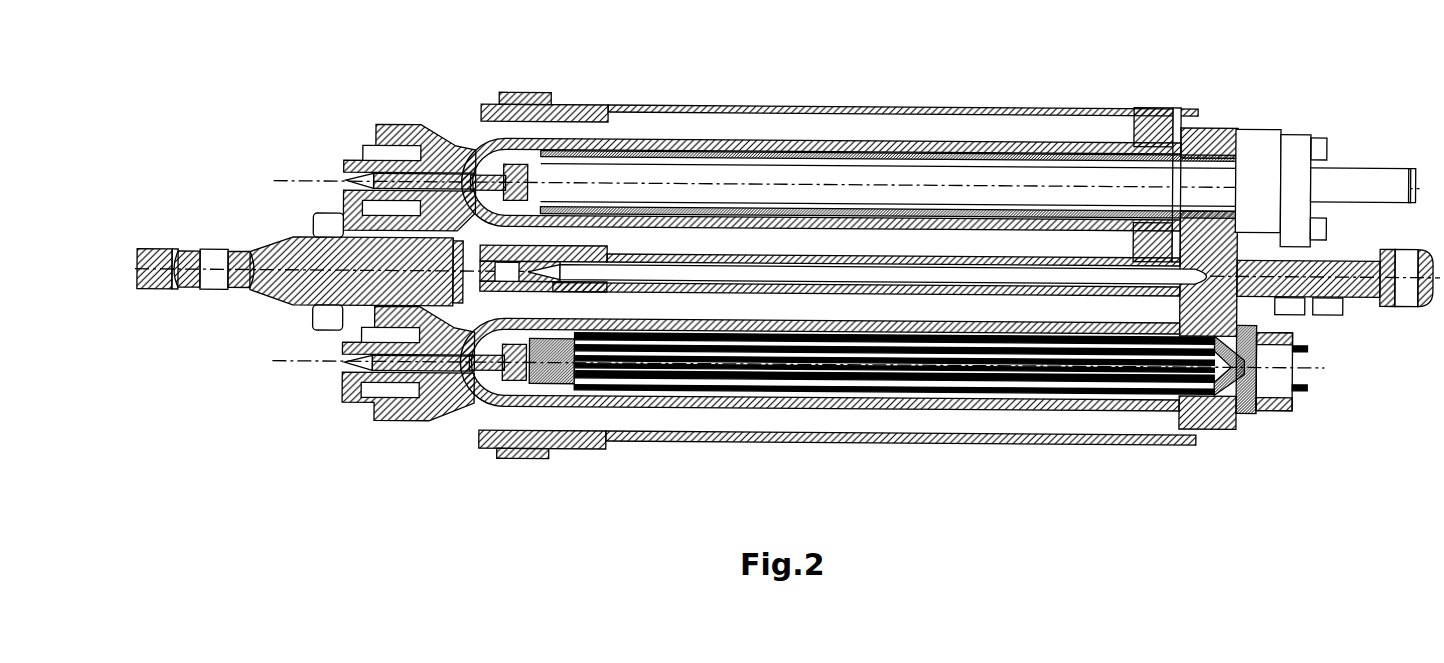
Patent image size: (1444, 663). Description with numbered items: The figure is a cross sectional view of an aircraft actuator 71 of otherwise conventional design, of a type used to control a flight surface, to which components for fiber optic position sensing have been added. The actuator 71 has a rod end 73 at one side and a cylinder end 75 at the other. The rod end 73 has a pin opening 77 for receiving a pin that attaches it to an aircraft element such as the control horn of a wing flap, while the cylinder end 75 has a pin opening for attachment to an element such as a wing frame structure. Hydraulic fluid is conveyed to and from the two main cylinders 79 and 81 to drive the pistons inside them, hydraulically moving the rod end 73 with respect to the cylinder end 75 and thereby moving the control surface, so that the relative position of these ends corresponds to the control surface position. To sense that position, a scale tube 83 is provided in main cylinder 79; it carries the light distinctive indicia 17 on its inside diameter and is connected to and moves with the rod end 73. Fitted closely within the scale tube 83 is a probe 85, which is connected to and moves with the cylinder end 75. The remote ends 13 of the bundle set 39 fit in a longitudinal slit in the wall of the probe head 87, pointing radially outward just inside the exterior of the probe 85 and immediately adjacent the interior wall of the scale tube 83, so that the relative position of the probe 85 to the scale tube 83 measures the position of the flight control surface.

The actuator 71 is at (942, 70).
The rod end 73 is at (287, 256).
The pin opening 77 is at (210, 293).
The remote ends of fiber optic bundles 13 is at (551, 386).
The light distinctive indicia 17 is at (575, 402).
The probe 85 is at (698, 383).
The scale tube 83 is at (742, 383).
The main cylinder 79 is at (915, 425).
The main cylinder 81 is at (972, 137).
The probe head 87 is at (1012, 179).
The cylinder end 75 is at (1341, 309).
The bundle set 39 is at (1305, 392).